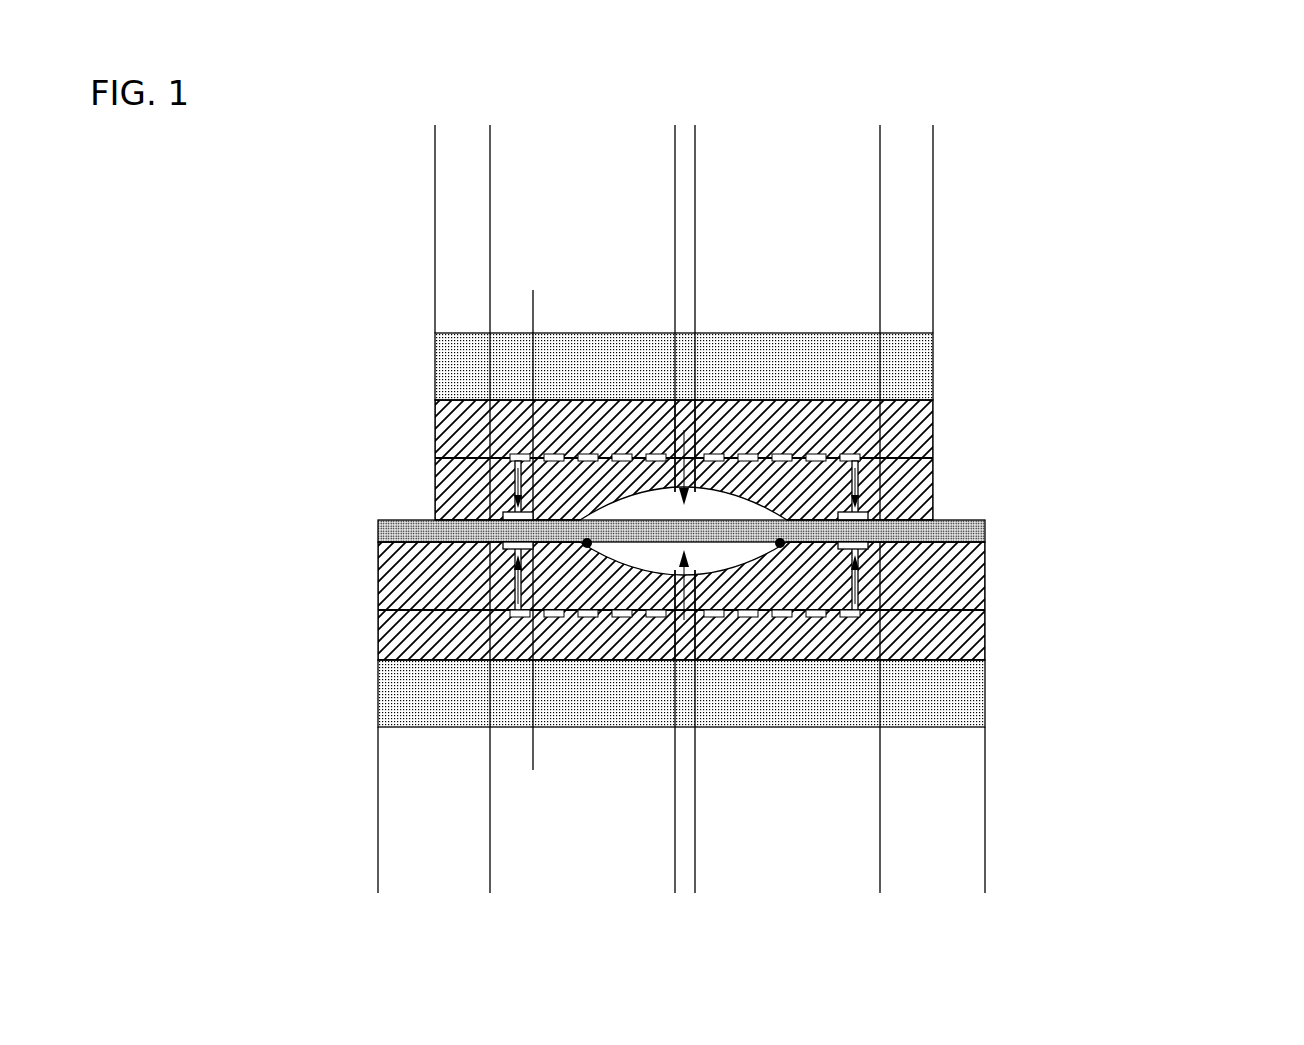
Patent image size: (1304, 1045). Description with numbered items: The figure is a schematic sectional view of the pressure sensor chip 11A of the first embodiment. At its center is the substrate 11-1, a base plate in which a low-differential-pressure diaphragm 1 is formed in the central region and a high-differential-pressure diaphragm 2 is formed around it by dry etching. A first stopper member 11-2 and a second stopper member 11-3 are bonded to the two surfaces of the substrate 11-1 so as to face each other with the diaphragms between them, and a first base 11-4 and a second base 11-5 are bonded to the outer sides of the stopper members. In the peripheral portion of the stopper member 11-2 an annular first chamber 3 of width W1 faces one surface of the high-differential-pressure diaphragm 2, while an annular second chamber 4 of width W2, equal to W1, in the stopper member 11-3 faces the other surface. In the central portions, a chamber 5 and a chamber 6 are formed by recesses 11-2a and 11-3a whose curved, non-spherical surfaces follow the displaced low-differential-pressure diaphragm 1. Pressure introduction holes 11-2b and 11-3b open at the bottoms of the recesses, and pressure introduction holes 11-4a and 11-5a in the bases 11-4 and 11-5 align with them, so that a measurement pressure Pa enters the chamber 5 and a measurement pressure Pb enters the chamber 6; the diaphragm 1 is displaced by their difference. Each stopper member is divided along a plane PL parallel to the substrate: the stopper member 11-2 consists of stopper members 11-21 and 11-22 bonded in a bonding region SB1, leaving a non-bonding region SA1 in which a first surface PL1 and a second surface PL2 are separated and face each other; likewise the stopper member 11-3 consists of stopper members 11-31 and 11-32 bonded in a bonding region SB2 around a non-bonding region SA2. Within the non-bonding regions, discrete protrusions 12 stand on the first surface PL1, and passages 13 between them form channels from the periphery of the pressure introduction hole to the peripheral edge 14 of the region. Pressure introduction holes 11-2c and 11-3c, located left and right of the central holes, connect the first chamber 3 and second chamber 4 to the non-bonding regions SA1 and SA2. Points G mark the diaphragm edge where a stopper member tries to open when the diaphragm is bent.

The low-differential-pressure diaphragm 1 is at (565, 727).
The high-differential-pressure diaphragm 2 is at (378, 545).
The first chamber 3 is at (435, 508).
The second chamber 4 is at (378, 578).
The chamber 5 is at (740, 460).
The chamber 6 is at (580, 727).
The protrusions 12 is at (575, 455).
The passages 13 is at (590, 455).
The peripheral edge 14 is at (435, 415).
The pressure sensor chip 11A is at (781, 509).
The substrate 11-1 is at (985, 530).
The first stopper member 11-2 is at (1115, 383).
The stopper member 11-21 is at (933, 462).
The stopper member 11-22 is at (933, 415).
The recess 11-2a is at (760, 440).
The pressure introduction hole 11-2b is at (655, 455).
The pressure introduction holes 11-2c is at (435, 477).
The second stopper member 11-3 is at (1115, 565).
The stopper member 11-31 is at (985, 580).
The stopper member 11-32 is at (985, 630).
The recess 11-3a is at (730, 727).
The pressure introduction hole 11-3b is at (635, 727).
The pressure introduction holes 11-3c is at (985, 665).
The first base 11-4 is at (933, 372).
The pressure introduction hole 11-4a is at (665, 333).
The second base 11-5 is at (781, 693).
The pressure introduction hole 11-5a is at (652, 727).
The plane PL is at (435, 445).
The first surface PL1 is at (435, 333).
The second surface PL2 is at (435, 385).
The points G is at (933, 408).
The width W1 is at (500, 333).
The width W2 is at (500, 727).
The non-bonding region SA1 is at (673, 167).
The non-bonding region SA2 is at (673, 852).
The bonding region SB1 is at (488, 167).
The bonding region SB2 is at (488, 852).
The measurement pressure Pa is at (684, 267).
The measurement pressure Pb is at (679, 754).